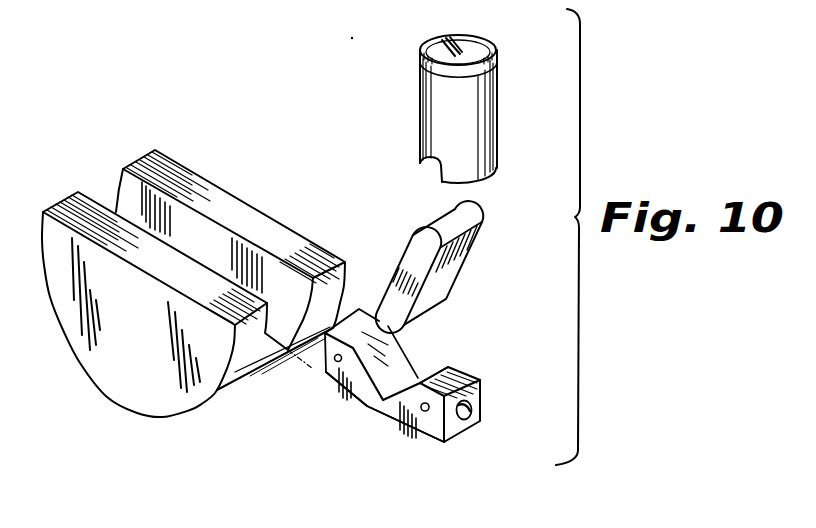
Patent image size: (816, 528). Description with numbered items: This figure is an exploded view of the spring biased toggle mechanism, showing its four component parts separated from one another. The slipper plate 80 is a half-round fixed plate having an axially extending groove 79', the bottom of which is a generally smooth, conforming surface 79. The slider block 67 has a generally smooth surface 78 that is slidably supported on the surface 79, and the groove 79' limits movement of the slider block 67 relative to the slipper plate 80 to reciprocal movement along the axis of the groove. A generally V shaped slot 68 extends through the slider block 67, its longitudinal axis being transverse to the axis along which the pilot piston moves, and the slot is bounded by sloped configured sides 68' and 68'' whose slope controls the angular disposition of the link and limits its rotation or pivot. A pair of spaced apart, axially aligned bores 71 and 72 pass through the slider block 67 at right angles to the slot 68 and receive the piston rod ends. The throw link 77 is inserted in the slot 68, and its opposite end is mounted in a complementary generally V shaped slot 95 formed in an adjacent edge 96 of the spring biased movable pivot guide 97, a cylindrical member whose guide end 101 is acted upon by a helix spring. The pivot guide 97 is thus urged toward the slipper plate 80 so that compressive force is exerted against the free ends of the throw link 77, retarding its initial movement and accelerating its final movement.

The slipper plate 80 is at (184, 404).
The conforming surface 79 is at (230, 221).
The axially extending groove 79' is at (279, 345).
The bore 72 is at (334, 359).
The V shaped slot 68 is at (399, 389).
The configured side of slot 68' is at (407, 350).
The configured side of slot 68'' is at (462, 355).
The smooth surface 78 is at (387, 421).
The slider block 67 is at (464, 425).
The bore 71 is at (425, 412).
The throw link 77 is at (407, 250).
The pivot guide 97 is at (465, 113).
The guide end 101 is at (484, 50).
The V shaped slot 95 is at (421, 169).
The adjacent edge 96 is at (478, 184).